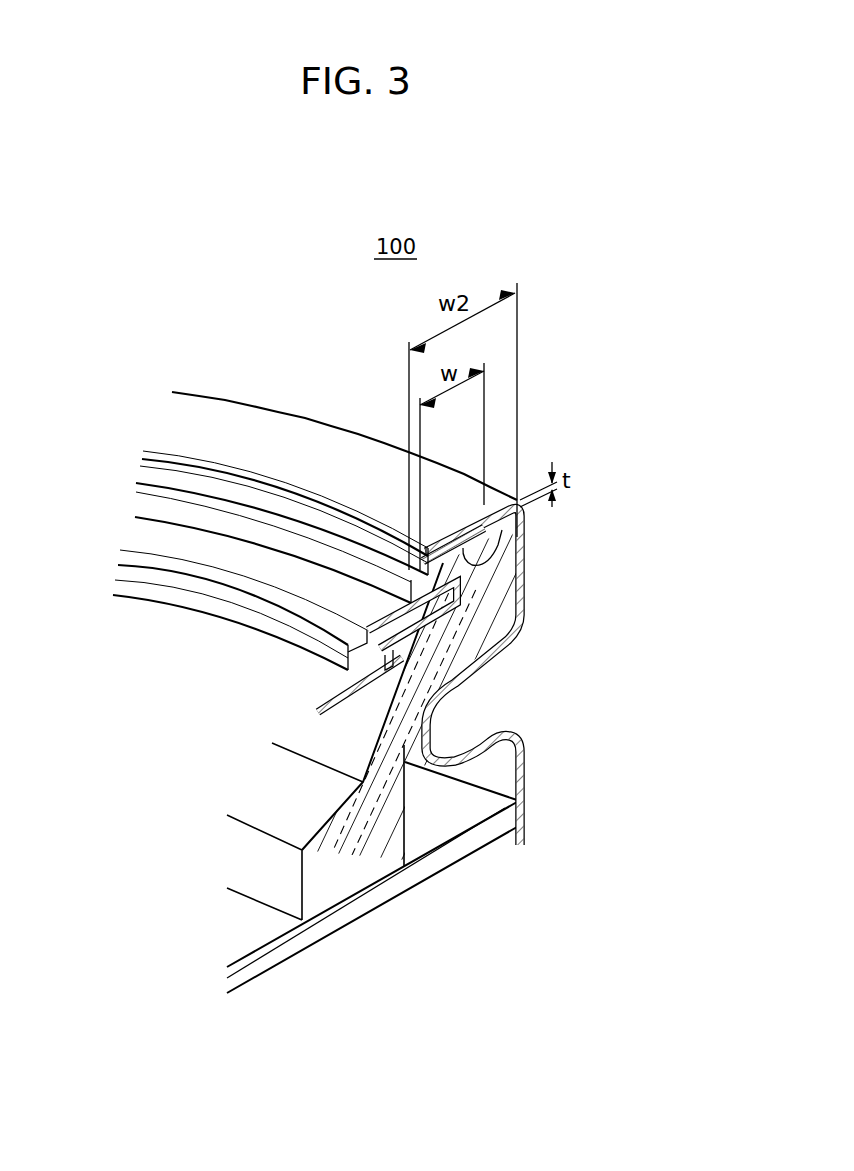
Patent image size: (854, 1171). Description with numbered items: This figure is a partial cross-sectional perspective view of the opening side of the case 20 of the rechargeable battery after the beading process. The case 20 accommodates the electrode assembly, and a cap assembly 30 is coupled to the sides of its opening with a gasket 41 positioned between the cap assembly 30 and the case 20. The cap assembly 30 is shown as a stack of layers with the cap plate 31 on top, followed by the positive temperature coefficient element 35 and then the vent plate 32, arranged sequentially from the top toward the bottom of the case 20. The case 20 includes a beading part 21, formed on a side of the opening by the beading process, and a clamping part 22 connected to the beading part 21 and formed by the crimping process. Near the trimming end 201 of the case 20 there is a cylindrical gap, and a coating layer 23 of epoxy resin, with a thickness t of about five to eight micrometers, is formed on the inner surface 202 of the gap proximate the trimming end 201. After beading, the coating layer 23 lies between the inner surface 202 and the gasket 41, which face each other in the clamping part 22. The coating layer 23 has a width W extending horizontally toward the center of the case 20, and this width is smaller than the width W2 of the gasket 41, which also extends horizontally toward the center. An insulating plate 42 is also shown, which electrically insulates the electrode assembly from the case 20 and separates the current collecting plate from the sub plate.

The case 20 is at (531, 617).
The beading part 21 is at (447, 698).
The clamping part 22 is at (522, 568).
The coating layer 23 is at (464, 525).
The trimming end 201 is at (456, 574).
The inner surface 202 is at (520, 532).
The cap assembly 30 is at (315, 528).
The cap plate 31 is at (179, 543).
The vent plate 32 is at (340, 697).
The positive temperature coefficient (PTC) element 35 is at (237, 595).
The gasket 41 is at (380, 827).
The insulating plate 42 is at (360, 905).